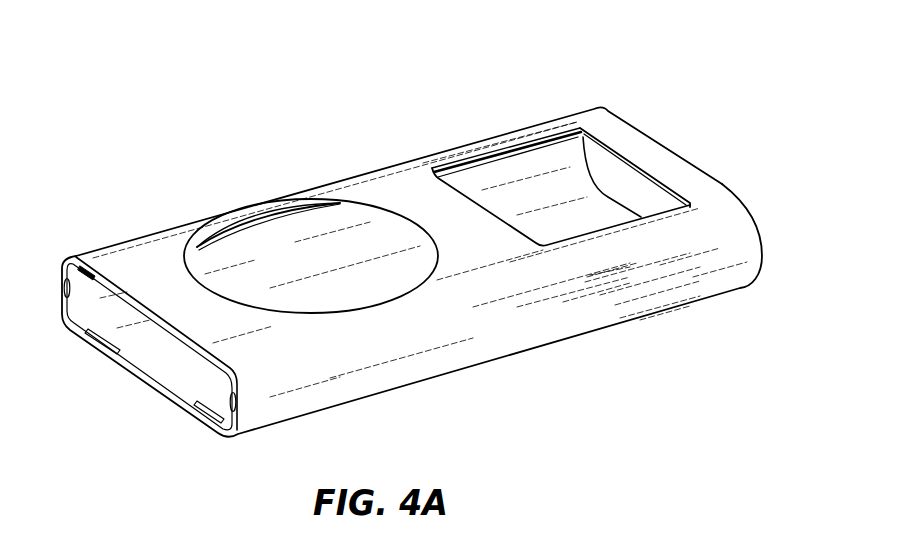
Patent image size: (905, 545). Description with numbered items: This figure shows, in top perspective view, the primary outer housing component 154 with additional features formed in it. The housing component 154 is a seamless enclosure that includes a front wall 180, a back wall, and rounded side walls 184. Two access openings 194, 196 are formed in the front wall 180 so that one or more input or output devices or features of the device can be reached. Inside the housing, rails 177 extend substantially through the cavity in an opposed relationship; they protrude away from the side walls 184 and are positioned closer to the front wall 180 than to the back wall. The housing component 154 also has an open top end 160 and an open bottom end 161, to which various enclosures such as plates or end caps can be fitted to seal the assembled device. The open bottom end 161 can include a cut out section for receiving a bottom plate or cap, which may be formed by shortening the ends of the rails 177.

The primary outer housing component 154 is at (195, 93).
The open top end 160 is at (729, 181).
The open bottom end 161 is at (160, 352).
The rails 177 is at (258, 222).
The front wall 180 is at (412, 197).
The rounded side walls 184 is at (483, 332).
The access opening 194 is at (617, 167).
The access opening 196 is at (198, 257).